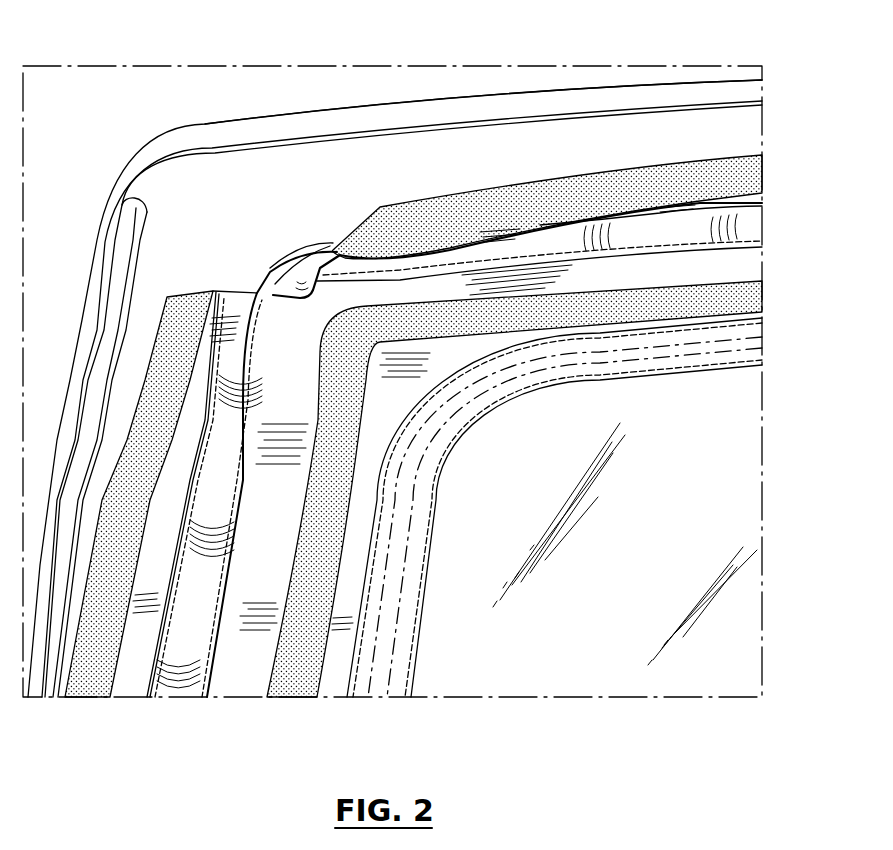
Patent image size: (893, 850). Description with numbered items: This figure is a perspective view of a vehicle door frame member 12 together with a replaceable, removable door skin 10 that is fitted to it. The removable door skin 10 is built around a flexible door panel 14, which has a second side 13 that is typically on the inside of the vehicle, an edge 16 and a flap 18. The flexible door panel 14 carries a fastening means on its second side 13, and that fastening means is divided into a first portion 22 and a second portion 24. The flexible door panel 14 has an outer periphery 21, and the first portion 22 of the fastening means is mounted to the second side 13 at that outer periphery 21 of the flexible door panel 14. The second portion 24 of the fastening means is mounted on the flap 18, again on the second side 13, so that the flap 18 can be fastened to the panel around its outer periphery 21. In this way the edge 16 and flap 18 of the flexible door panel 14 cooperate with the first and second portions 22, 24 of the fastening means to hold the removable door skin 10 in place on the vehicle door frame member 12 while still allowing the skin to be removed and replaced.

The removable door skin 10 is at (746, 621).
The vehicle door frame member 12 is at (748, 93).
The second side 13 is at (737, 414).
The flexible door panel 14 is at (238, 680).
The edge 16 is at (747, 248).
The flap 18 is at (747, 178).
The outer periphery 21 is at (748, 267).
The first portion 22 is at (750, 302).
The second portion 24 is at (87, 682).